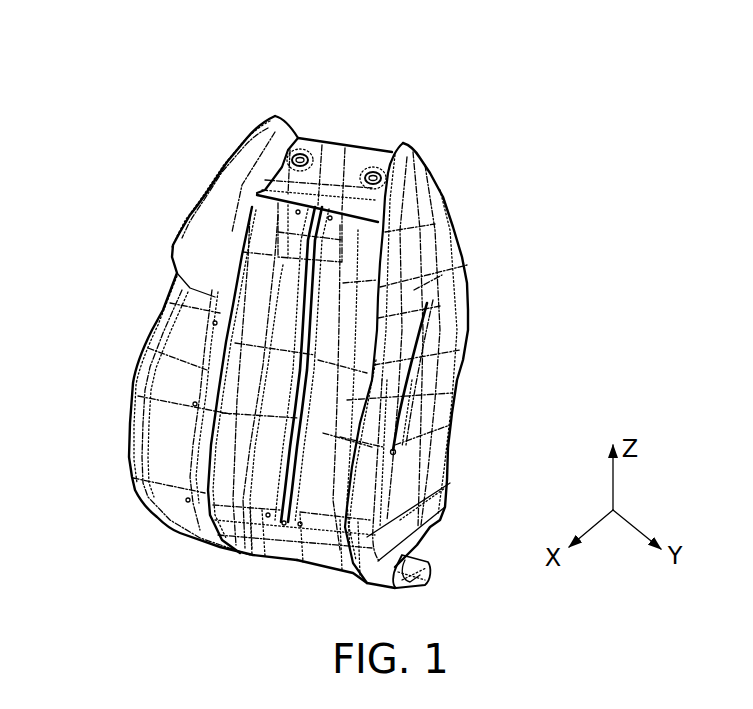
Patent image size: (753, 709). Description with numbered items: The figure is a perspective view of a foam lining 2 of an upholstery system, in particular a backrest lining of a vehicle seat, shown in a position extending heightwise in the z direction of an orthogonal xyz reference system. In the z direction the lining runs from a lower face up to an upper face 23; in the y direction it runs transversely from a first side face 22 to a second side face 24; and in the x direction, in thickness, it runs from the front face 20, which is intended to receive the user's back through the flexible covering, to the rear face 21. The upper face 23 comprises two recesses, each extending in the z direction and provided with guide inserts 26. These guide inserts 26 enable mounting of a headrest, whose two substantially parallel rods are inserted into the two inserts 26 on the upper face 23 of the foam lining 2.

The foam lining 2 is at (326, 356).
The front face 20 is at (238, 560).
The rear face 21 is at (321, 356).
The first side face 22 is at (130, 455).
The upper face 23 is at (348, 150).
The second side face 24 is at (438, 435).
The guide inserts 26 is at (302, 151).